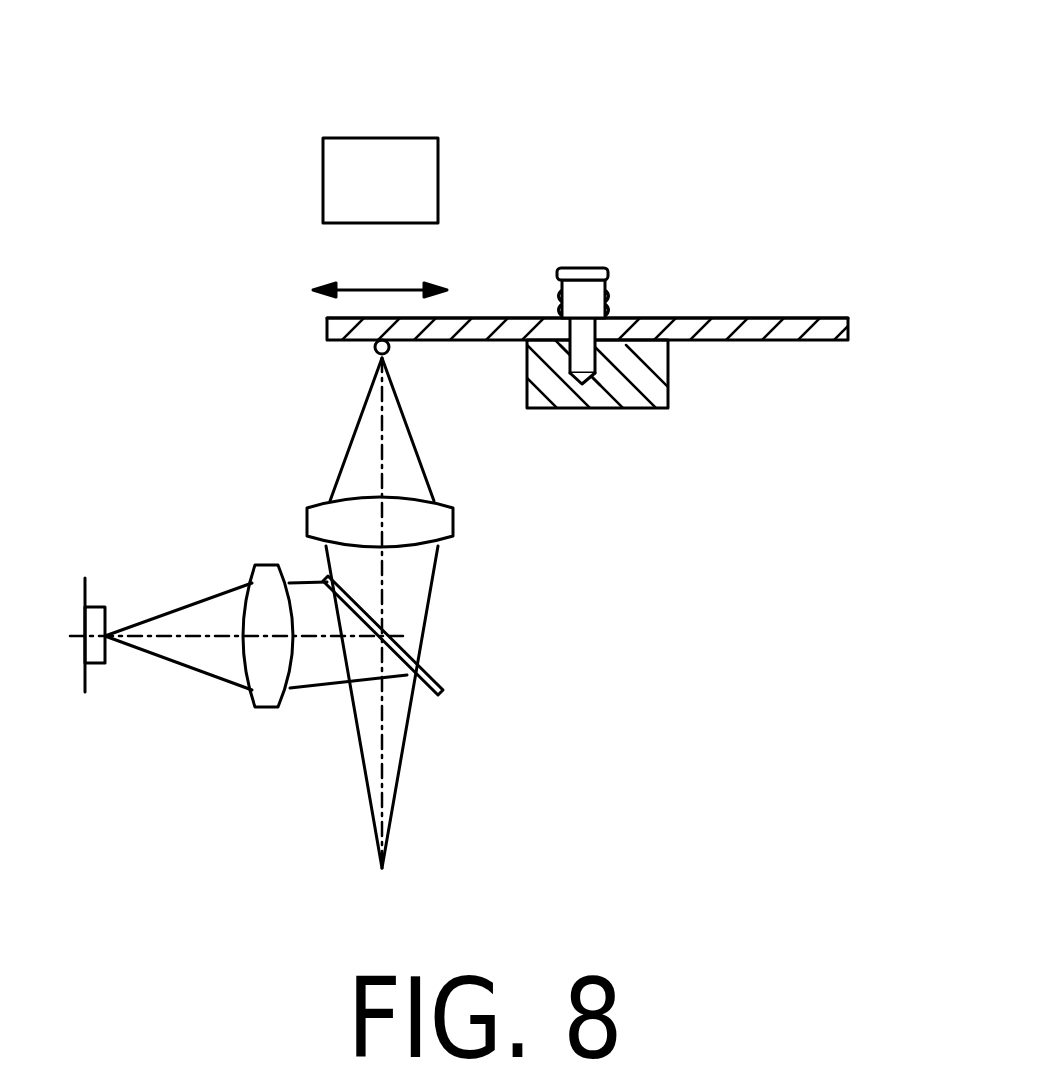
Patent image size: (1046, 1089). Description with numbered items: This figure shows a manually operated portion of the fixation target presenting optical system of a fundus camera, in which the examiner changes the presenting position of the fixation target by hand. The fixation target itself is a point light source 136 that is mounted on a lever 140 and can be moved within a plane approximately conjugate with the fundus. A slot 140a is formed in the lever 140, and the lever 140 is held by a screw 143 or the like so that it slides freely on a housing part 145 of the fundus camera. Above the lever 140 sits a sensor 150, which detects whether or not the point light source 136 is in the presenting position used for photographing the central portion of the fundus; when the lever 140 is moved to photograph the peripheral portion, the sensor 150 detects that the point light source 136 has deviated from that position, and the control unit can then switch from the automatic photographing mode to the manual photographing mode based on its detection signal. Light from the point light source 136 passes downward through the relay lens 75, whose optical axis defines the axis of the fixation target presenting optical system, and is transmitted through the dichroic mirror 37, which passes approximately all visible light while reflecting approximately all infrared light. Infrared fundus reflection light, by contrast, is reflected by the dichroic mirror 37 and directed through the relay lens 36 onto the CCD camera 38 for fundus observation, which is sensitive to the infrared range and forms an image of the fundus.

The sensor 150 is at (408, 138).
The screw 143 is at (575, 268).
The lever 140 is at (822, 318).
The slot 140a is at (630, 317).
The housing part 145 is at (668, 382).
The point light source 136 is at (370, 349).
The relay lens 75 is at (317, 500).
The dichroic mirror 37 is at (433, 698).
The relay lens 36 is at (270, 707).
The CCD camera 38 is at (95, 667).